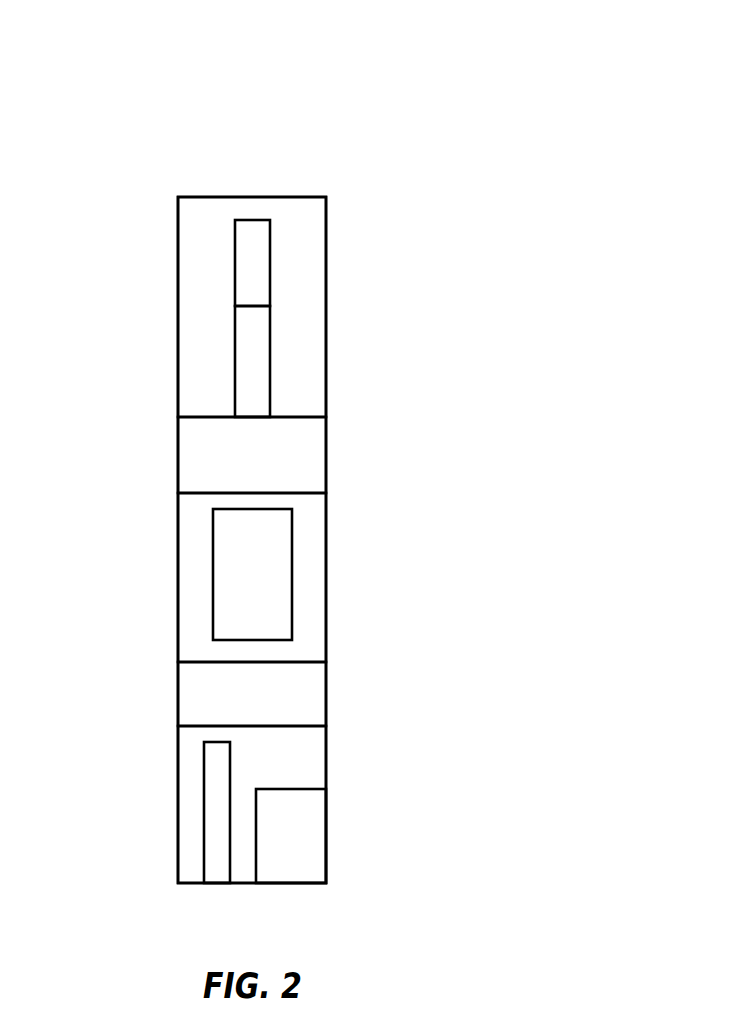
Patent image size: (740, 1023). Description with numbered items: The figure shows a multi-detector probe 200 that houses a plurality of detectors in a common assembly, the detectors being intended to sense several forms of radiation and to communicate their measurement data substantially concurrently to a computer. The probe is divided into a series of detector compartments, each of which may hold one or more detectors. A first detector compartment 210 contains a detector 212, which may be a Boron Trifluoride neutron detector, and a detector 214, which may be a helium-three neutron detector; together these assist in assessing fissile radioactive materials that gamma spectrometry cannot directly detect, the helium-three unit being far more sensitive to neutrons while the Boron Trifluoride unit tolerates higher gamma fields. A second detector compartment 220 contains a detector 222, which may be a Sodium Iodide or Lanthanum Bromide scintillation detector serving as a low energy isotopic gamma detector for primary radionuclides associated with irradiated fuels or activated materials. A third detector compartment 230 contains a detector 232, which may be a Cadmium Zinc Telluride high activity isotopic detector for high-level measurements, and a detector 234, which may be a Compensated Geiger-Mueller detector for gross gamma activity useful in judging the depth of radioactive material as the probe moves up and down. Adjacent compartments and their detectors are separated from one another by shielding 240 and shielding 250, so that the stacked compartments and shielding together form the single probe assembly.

The multi-detector probe 200 is at (289, 118).
The detector compartment 210 is at (178, 304).
The detector 212 is at (270, 257).
The detector 214 is at (270, 358).
The detector compartment 220 is at (178, 573).
The detector 222 is at (292, 556).
The detector compartment 230 is at (178, 776).
The detector 232 is at (204, 836).
The detector 234 is at (305, 847).
The shielding 240 is at (326, 448).
The shielding 250 is at (326, 698).